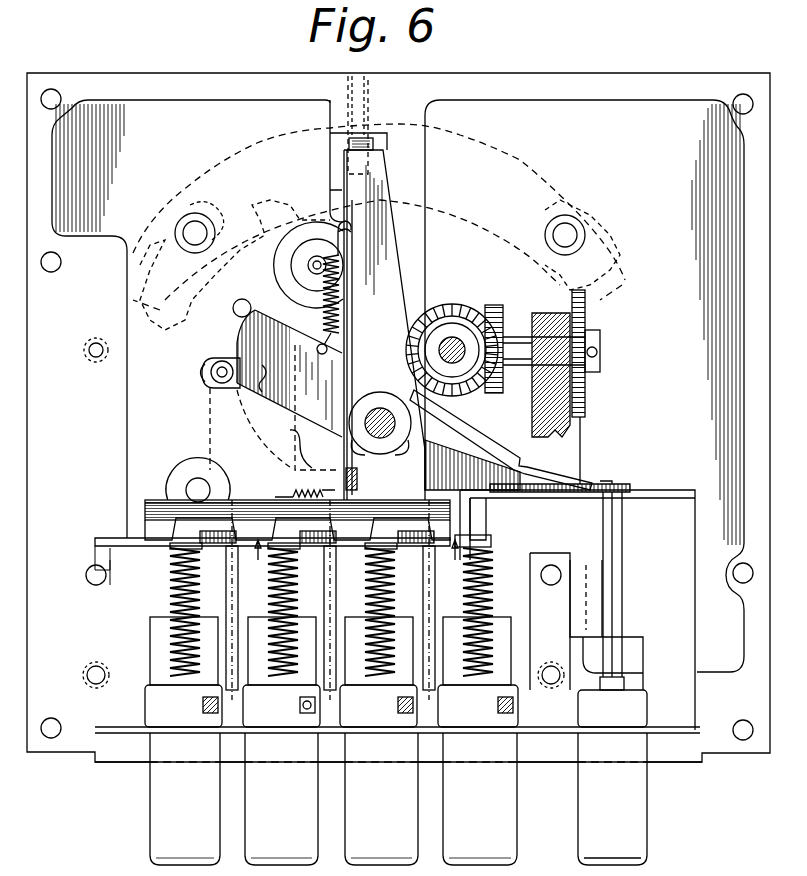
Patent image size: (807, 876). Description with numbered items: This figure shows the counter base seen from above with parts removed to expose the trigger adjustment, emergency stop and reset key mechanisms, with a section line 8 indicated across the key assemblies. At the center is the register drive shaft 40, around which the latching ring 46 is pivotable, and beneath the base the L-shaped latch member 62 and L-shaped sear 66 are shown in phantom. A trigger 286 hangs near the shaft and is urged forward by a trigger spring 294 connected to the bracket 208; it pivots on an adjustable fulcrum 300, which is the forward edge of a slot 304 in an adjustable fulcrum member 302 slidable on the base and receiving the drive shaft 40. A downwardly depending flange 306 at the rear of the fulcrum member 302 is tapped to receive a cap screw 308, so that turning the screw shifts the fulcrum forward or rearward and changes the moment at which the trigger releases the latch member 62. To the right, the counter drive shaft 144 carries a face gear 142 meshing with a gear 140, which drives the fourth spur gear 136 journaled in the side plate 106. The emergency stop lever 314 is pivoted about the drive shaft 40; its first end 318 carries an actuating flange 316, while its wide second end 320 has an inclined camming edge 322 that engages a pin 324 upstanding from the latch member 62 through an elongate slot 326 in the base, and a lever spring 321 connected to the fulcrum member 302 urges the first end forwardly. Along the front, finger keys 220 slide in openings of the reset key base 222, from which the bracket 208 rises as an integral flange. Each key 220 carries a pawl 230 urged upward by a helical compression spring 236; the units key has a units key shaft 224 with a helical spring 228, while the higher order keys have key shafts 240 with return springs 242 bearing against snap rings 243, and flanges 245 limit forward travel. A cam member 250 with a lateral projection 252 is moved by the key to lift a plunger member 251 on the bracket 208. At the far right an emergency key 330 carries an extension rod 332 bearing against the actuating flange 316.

The section line 8- 8 is at (242, 625).
The register drive shaft 40 is at (430, 422).
The latching ring 46 is at (202, 187).
The latch member 62 is at (228, 403).
The sear 66 is at (268, 225).
The side plate 106 is at (585, 400).
The fourth spur gear 136 is at (586, 306).
The gear 140 is at (505, 305).
The face gear 142 is at (533, 319).
The counter drive shaft 144 is at (440, 350).
The bracket 208 is at (145, 518).
The finger key 220 is at (175, 802).
The reset key base 222 is at (662, 735).
The units key shaft 224 is at (486, 524).
The helical spring 228 is at (493, 602).
The pawl 230 is at (514, 708).
The helical compression spring 236 is at (206, 704).
The key shaft 240 is at (170, 572).
The helical compression spring 242 is at (170, 592).
The snap ring 243 is at (98, 549).
The flange 245 is at (218, 728).
The cam member 250 is at (480, 575).
The plunger member 251 is at (462, 525).
The lateral projection 252 is at (452, 722).
The trigger 286 is at (290, 432).
The trigger spring 294 is at (292, 492).
The adjustable fulcrum 300 is at (392, 465).
The adjustable fulcrum member 302 is at (390, 282).
The slot 304 is at (440, 462).
The flange 306 is at (380, 152).
The cap screw 308 is at (385, 100).
The emergency stop lever 314 is at (468, 442).
The actuating flange 316 is at (540, 478).
The first end 318 is at (590, 484).
The second end 320 is at (262, 400).
The lever spring 321 is at (342, 286).
The camming edge 322 is at (250, 338).
The pin 324 is at (204, 378).
The elongate slot 326 is at (208, 364).
The emergency key 330 is at (632, 828).
The extension rod 332 is at (615, 594).